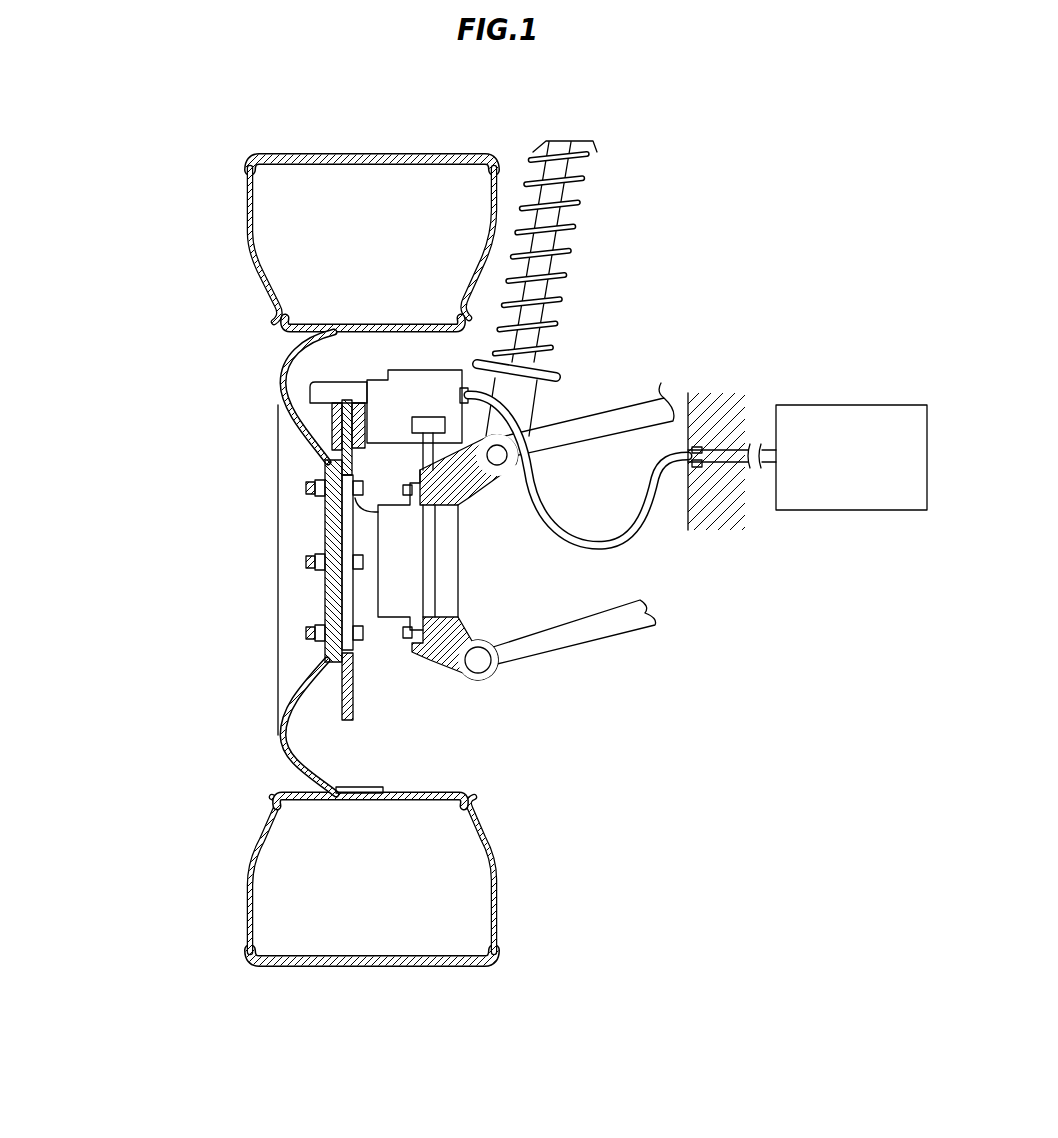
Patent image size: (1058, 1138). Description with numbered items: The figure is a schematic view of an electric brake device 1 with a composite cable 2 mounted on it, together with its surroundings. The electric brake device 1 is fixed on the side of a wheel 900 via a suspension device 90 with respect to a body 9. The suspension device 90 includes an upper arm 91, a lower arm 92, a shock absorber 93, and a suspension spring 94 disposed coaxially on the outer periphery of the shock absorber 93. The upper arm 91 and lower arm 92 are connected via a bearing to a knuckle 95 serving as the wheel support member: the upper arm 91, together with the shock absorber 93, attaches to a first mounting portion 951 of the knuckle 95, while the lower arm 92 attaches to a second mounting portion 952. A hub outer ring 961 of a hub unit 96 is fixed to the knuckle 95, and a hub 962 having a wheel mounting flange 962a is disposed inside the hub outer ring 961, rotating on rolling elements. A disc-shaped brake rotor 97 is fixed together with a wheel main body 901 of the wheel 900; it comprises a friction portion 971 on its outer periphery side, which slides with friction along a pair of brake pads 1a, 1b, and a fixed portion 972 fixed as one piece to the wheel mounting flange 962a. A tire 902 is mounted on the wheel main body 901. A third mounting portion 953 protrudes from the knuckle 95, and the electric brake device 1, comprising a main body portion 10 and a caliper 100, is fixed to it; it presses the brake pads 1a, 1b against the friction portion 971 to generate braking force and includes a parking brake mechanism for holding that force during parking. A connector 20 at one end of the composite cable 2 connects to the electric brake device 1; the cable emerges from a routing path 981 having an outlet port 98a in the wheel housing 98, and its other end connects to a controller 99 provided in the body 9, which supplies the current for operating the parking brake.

The electric brake device 1 is at (324, 365).
The brake pad 1a is at (360, 440).
The brake pad 1b is at (328, 443).
The main body portion 10 is at (380, 390).
The caliper 100 is at (317, 393).
The composite cable 2 is at (635, 565).
The connector 20 is at (467, 385).
The body 9 is at (750, 366).
The suspension device 90 is at (636, 301).
The upper arm 91 is at (588, 418).
The lower arm 92 is at (590, 637).
The shock absorber 93 is at (547, 260).
The suspension spring 94 is at (577, 230).
The knuckle 95 is at (468, 557).
The first mounting portion 951 is at (495, 457).
The second mounting portion 952 is at (477, 658).
The third mounting portion 953 is at (430, 418).
The hub unit 96 is at (417, 602).
The hub outer ring 961 is at (362, 605).
The hub 962 is at (388, 608).
The wheel mounting flange 962a is at (350, 573).
The brake rotor 97 is at (345, 624).
The friction portion 971 is at (349, 686).
The fixed portion 972 is at (337, 508).
The wheel housing 98 is at (692, 495).
The outlet port 98a is at (673, 454).
The routing path 981 is at (720, 463).
The controller 99 is at (865, 405).
The wheel 900 is at (207, 765).
The wheel main body 901 is at (282, 750).
The tire 902 is at (272, 838).